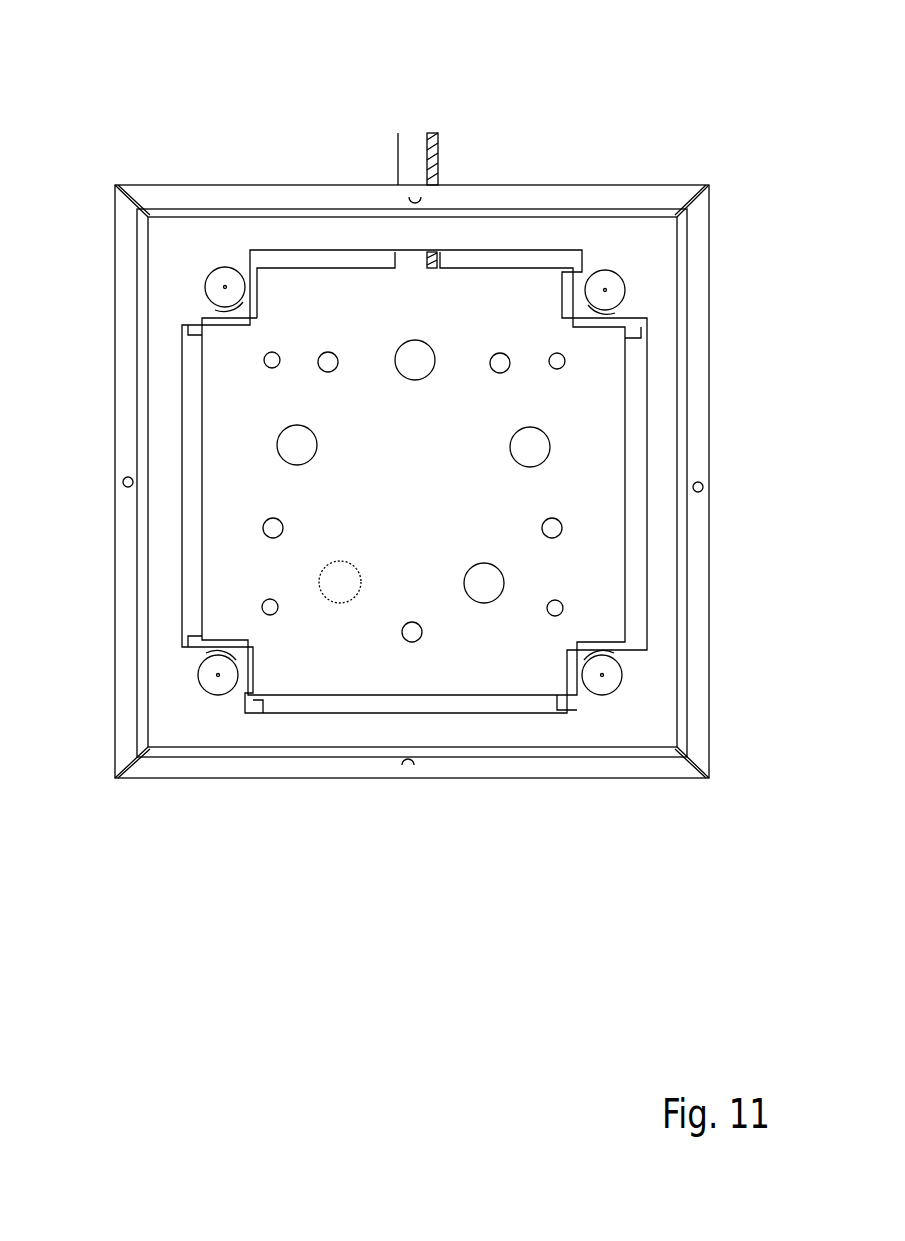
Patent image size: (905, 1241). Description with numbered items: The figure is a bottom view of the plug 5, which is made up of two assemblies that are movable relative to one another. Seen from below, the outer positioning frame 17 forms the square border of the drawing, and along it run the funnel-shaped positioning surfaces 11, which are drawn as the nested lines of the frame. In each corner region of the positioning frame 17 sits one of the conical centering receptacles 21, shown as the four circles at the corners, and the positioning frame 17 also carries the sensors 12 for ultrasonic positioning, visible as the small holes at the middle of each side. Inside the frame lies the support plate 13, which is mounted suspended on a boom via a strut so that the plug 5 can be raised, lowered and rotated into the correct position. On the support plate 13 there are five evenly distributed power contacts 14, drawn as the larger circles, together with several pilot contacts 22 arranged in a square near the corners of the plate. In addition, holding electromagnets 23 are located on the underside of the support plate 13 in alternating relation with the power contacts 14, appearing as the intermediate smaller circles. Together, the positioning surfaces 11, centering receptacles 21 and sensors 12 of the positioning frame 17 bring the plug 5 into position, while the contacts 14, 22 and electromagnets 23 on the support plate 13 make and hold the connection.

The plug 5 is at (282, 158).
The funnel-shaped positioning surfaces 11 is at (530, 195).
The sensors 12 is at (420, 190).
The support plate 13 is at (608, 444).
The power contacts 14 is at (300, 443).
The outer positioning frame 17 is at (718, 345).
The conical centering receptacles 21 is at (607, 290).
The pilot contacts 22 is at (273, 355).
The holding electromagnets 23 is at (330, 356).